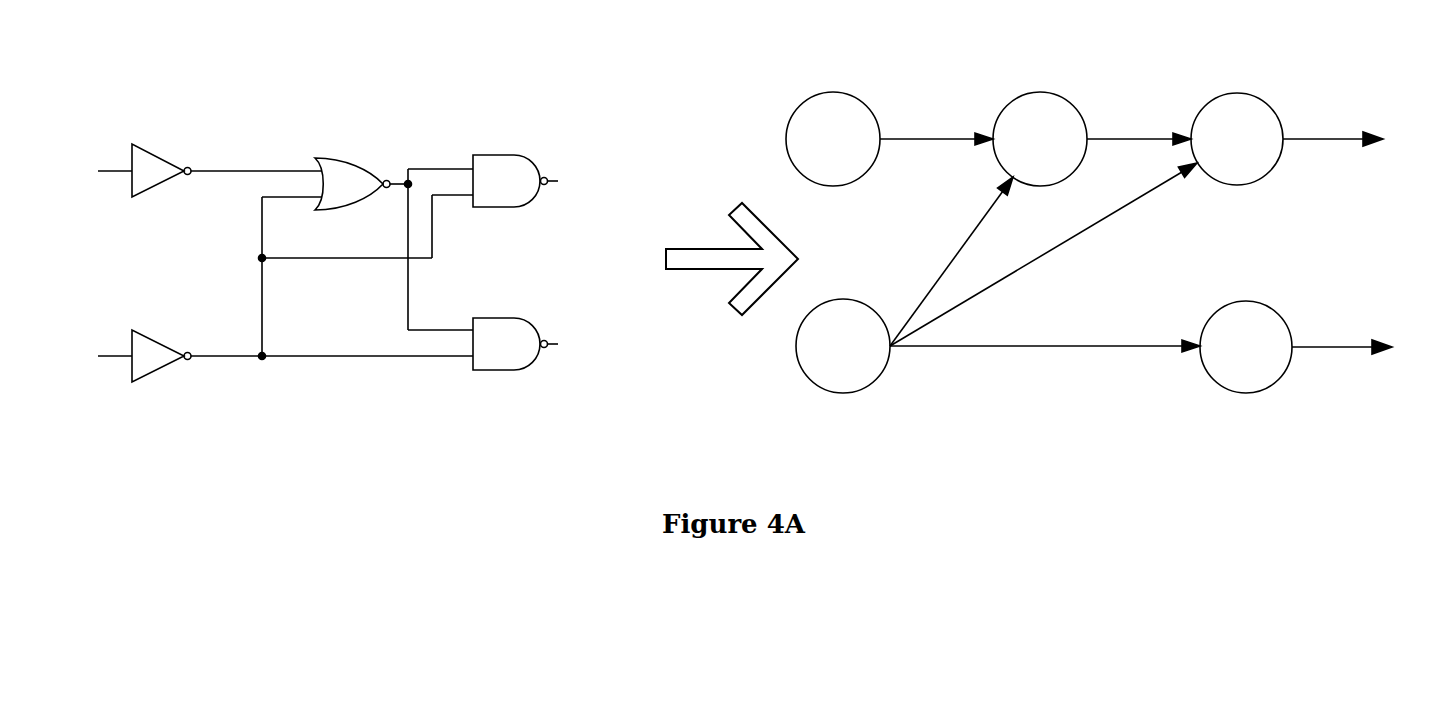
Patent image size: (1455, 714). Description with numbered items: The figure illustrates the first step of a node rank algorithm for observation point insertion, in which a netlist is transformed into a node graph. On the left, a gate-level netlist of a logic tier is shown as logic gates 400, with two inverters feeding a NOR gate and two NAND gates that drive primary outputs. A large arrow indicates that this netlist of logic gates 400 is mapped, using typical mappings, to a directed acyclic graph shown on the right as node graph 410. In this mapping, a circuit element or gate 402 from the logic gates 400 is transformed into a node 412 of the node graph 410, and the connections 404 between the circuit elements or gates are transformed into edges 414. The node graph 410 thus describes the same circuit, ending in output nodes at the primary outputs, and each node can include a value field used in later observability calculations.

The logic gates 400 is at (368, 285).
The gate 402 is at (335, 158).
The connections 404 is at (352, 262).
The node graph 410 is at (1117, 232).
The node 412 is at (1006, 108).
The edges 414 is at (1062, 238).